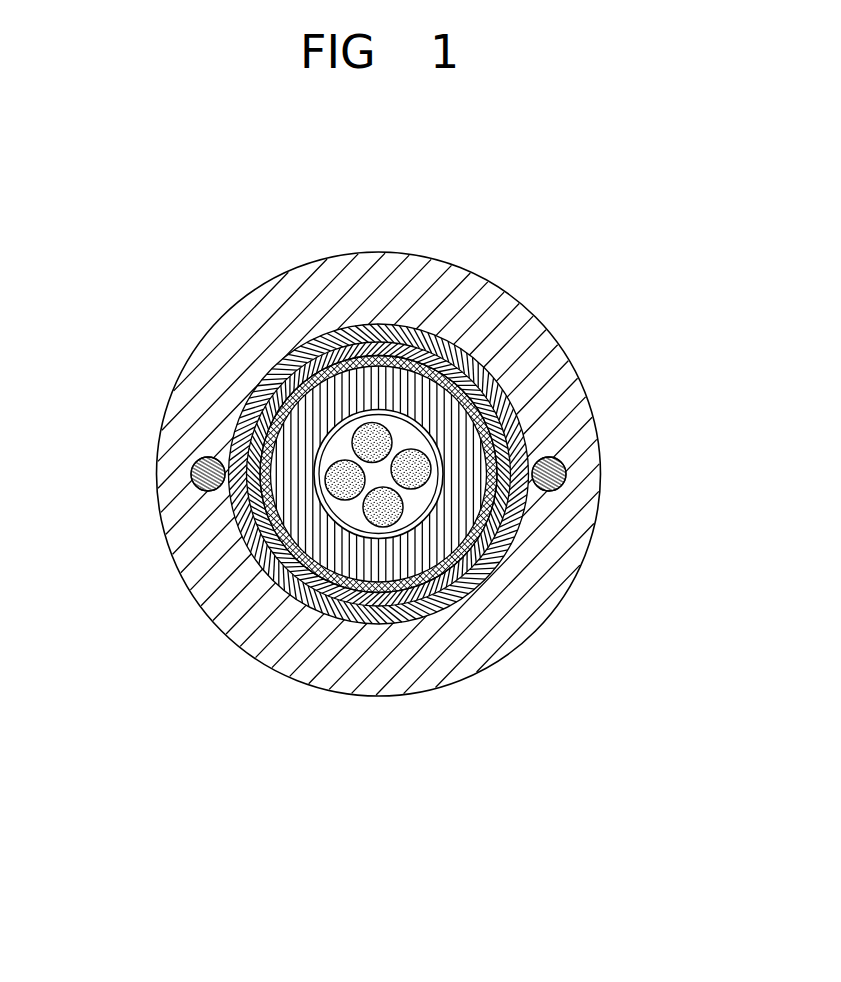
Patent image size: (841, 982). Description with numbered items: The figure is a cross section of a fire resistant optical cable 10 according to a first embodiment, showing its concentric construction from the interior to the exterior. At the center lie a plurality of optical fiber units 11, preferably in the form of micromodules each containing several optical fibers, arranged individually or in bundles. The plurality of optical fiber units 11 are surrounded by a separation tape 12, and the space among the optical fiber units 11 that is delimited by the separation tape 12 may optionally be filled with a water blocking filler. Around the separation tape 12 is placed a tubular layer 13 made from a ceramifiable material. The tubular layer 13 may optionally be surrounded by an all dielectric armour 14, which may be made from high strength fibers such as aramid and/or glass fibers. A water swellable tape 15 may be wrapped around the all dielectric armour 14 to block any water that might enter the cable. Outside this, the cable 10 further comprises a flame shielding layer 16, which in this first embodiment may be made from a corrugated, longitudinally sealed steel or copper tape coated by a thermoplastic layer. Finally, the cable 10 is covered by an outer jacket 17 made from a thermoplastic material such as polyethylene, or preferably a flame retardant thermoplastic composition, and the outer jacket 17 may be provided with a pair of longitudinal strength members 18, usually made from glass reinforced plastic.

The fire resistant optical cable 10 is at (168, 331).
The optical fiber units 11 is at (317, 488).
The separation tape 12 is at (322, 520).
The tubular layer 13 is at (342, 572).
The all dielectric armour 14 is at (343, 607).
The water swellable tape 15 is at (368, 626).
The flame shielding layer 16 is at (487, 583).
The outer jacket 17 is at (592, 545).
The longitudinal strength members 18 is at (547, 457).